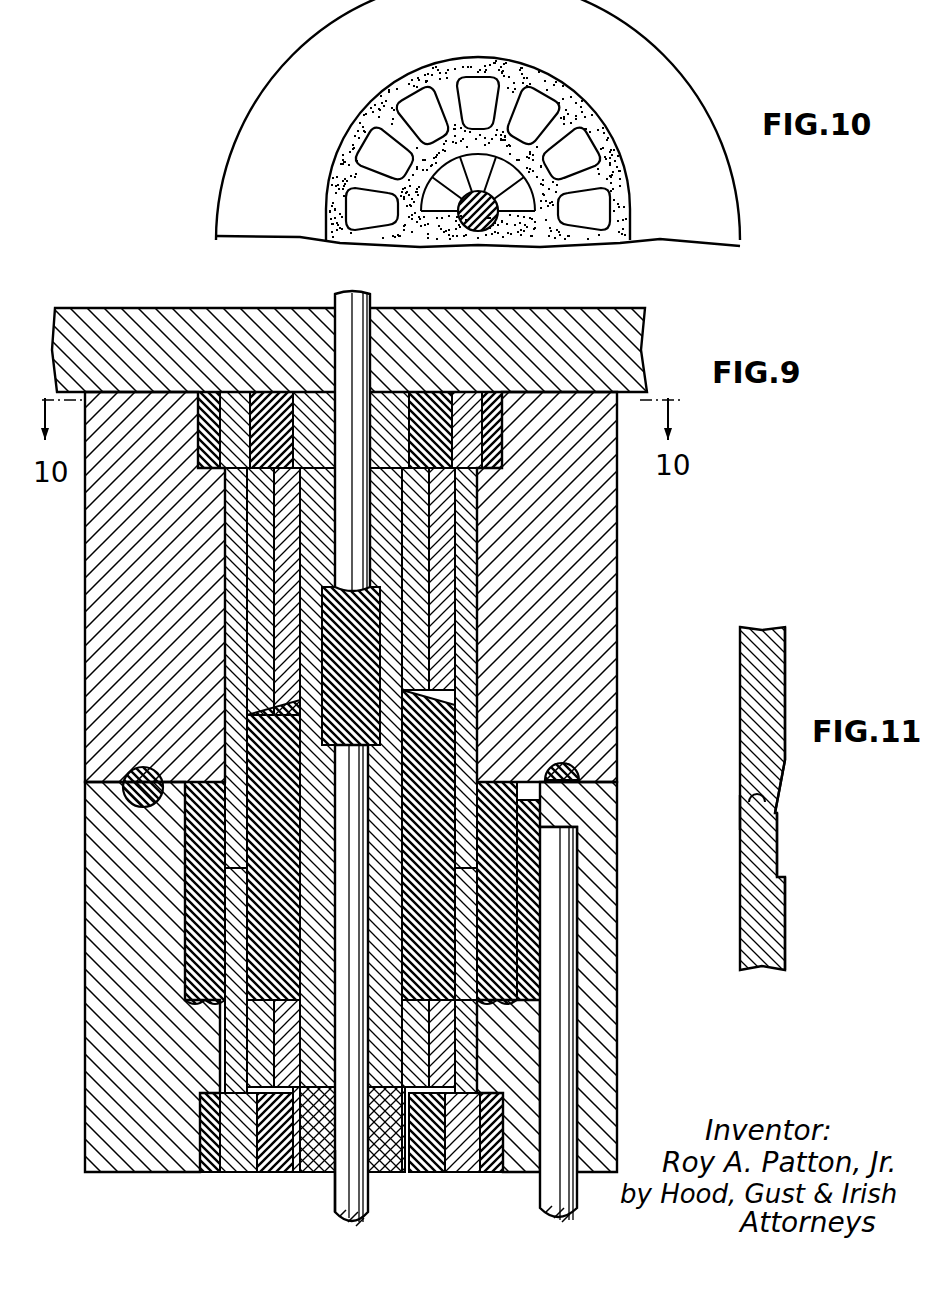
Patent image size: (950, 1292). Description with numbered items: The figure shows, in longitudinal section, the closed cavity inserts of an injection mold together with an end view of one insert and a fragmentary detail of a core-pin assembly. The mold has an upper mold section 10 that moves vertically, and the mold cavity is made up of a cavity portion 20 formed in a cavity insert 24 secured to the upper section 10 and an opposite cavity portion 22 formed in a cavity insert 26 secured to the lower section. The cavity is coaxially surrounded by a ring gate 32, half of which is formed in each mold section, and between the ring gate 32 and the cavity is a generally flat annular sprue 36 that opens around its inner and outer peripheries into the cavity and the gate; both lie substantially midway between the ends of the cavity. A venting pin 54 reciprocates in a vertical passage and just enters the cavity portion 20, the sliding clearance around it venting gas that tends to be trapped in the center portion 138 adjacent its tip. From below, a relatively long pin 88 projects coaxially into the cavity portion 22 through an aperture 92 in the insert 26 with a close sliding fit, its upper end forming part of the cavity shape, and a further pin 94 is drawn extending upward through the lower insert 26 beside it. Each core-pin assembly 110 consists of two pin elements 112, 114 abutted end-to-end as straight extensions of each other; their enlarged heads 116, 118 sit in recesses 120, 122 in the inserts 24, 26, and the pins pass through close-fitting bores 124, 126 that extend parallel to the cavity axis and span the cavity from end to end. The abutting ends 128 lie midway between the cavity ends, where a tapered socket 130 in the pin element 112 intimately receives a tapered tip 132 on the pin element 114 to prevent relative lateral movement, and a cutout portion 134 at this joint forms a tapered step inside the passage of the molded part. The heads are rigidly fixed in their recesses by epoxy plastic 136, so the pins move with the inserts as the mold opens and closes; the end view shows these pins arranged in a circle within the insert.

In FIG. 9, the upper mold section 10 is at (650, 354).
In FIG. 9, the cavity portion 20 is at (432, 732).
In FIG. 9, the cavity portion 22 is at (512, 881).
In FIG. 9, the cavity insert 24 is at (618, 582).
In FIG. 9, the cavity insert 26 is at (616, 972).
In FIG. 9, the ring gate 32 is at (128, 793).
In FIG. 9, the annular sprue 36 is at (172, 772).
In FIG. 9, the venting pin 54 is at (366, 298).
In FIG. 9, the pin 88 is at (368, 1198).
In FIG. 9, the aperture 92 is at (335, 1186).
In FIG. 9, the side rod 94 is at (572, 1108).
In FIG. 9, the core-pin assembly 110 is at (474, 648).
In FIG. 11, the core-pin assembly 110 is at (736, 718).
In FIG. 9, the pin element 112 is at (237, 594).
In FIG. 11, the pin element 112 is at (786, 660).
In FIG. 9, the pin element 114 is at (228, 1043).
In FIG. 11, the pin element 114 is at (786, 928).
In FIG. 10, the enlarged head 116 is at (588, 217).
In FIG. 9, the enlarged head 116 is at (468, 408).
In FIG. 9, the enlarged head 118 is at (242, 1162).
In FIG. 9, the recess 120 is at (495, 437).
In FIG. 9, the recess 122 is at (497, 1150).
In FIG. 9, the bore 124 is at (470, 579).
In FIG. 9, the bore 126 is at (468, 1049).
In FIG. 9, the abutting ends 128 is at (228, 865).
In FIG. 11, the abutting ends 128 is at (736, 826).
In FIG. 11, the tapered socket 130 is at (775, 813).
In FIG. 11, the tapered tip 132 is at (752, 800).
In FIG. 11, the cutout portion 134 is at (779, 851).
In FIG. 10, the epoxy plastic 136 is at (332, 247).
In FIG. 9, the epoxy plastic 136 is at (265, 410).
In FIG. 9, the center portion 138 is at (348, 602).